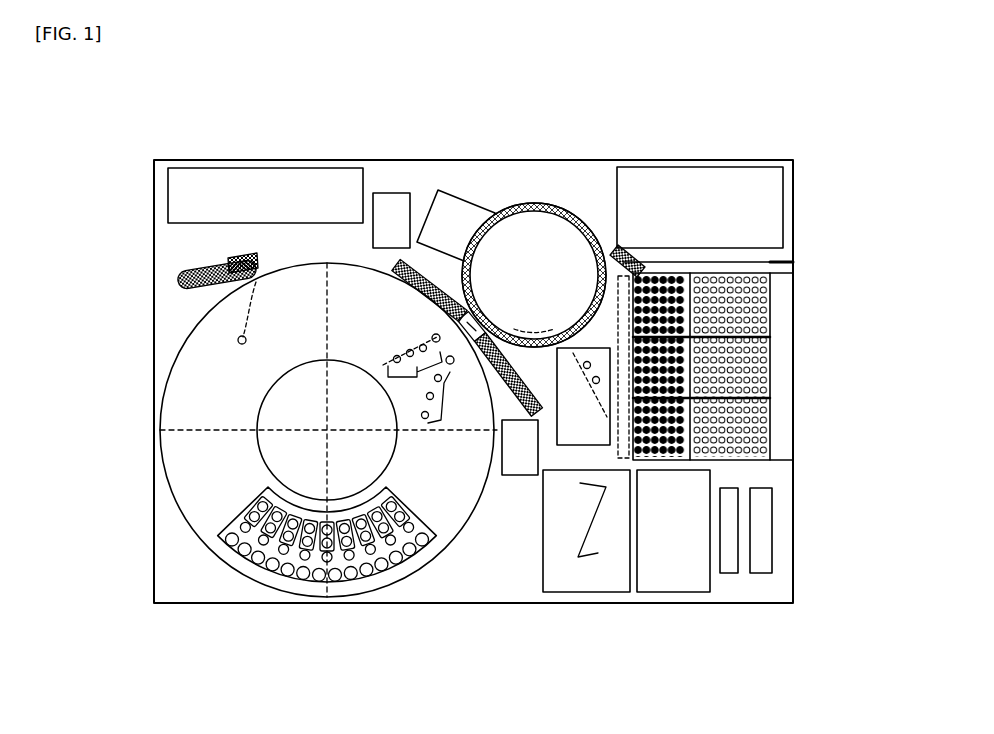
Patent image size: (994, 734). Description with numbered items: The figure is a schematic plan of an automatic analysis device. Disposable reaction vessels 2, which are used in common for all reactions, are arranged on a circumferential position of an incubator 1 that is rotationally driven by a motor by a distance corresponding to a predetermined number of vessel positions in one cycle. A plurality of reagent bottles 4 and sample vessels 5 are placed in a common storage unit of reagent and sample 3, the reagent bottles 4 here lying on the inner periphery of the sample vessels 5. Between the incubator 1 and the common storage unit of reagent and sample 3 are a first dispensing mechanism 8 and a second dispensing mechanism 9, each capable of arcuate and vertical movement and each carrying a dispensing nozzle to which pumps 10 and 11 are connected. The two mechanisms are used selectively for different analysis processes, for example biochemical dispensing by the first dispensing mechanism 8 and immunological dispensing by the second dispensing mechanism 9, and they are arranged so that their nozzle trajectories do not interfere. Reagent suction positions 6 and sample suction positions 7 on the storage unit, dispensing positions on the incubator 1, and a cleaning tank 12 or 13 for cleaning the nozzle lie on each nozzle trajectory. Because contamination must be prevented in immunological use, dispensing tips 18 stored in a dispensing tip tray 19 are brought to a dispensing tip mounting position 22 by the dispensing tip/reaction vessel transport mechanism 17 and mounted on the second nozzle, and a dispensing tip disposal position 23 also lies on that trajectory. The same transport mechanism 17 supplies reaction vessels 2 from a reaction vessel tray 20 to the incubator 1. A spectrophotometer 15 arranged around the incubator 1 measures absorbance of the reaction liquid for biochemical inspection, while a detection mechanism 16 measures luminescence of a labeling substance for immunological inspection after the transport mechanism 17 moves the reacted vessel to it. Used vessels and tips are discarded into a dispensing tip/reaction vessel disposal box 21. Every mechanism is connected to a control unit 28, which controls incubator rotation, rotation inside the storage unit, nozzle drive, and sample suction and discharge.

The incubator 1 is at (537, 245).
The reaction vessels 2 is at (577, 240).
The common storage unit of reagent and sample 3 is at (232, 465).
The reagent bottles 4 is at (230, 565).
The sample vessels 5 is at (298, 578).
The reagent suction positions 6 is at (345, 402).
The sample suction positions 7 is at (395, 355).
The first dispensing mechanism 8 is at (396, 262).
The second dispensing mechanism 9 is at (537, 412).
The pump 10 is at (388, 218).
The pump 11 is at (537, 473).
The cleaning tank 12 is at (475, 218).
The cleaning tank 13 is at (523, 440).
The spectrophotometer 15 is at (445, 280).
The detection mechanism 16 is at (680, 193).
The dispensing tip/reaction vessel transport mechanism 17 is at (630, 245).
The dispensing tips 18 is at (692, 286).
The dispensing tip tray 19 is at (695, 310).
The reaction vessel tray 20 is at (738, 355).
The dispensing tip/reaction vessel disposal box 21 is at (748, 458).
The dispensing tip mounting position 22 is at (692, 455).
The dispensing tip disposal position 23 is at (645, 442).
The control unit 28 is at (213, 208).